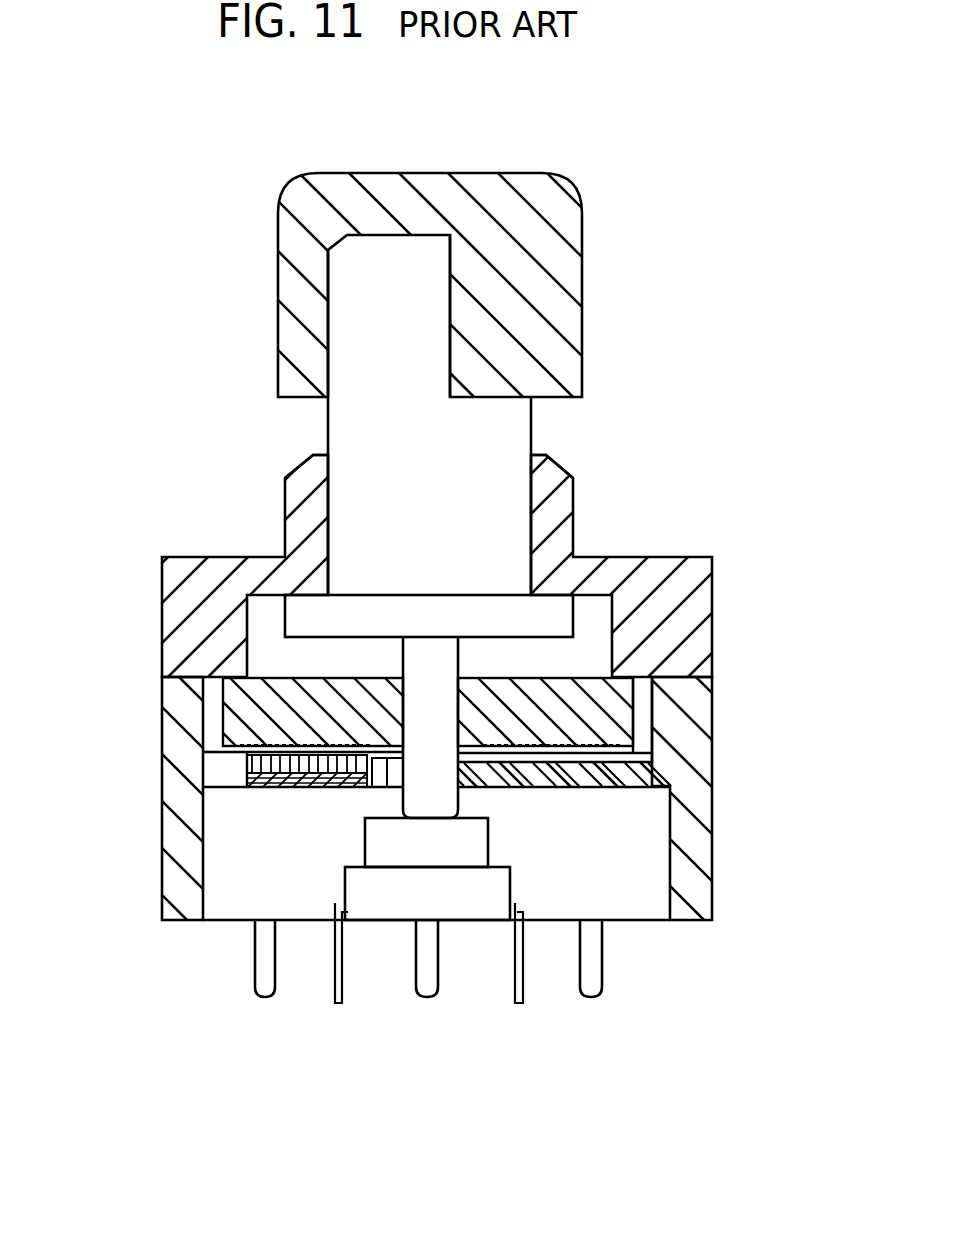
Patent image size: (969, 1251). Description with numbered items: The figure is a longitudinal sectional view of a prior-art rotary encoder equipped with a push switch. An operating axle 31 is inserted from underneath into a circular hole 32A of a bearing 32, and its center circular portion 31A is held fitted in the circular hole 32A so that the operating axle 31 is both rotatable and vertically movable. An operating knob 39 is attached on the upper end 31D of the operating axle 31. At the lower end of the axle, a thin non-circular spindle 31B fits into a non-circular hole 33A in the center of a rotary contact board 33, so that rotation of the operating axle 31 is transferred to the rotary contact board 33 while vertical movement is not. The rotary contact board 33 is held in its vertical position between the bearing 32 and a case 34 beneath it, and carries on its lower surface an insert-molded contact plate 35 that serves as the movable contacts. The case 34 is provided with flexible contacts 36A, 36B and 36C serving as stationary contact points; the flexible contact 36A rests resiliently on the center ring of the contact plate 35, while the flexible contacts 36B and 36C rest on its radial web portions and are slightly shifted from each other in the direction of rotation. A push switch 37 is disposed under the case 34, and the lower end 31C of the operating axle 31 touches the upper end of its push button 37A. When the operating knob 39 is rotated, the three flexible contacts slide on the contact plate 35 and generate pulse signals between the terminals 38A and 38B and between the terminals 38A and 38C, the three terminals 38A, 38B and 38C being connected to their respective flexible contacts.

The operating knob 39 is at (558, 258).
The operating axle 31 is at (549, 526).
The center circular portion 31A is at (498, 497).
The thin non-circular spindle 31B is at (438, 717).
The lower end 31C is at (433, 818).
The upper end 31D is at (418, 352).
The bearing 32 is at (175, 586).
The circular hole 32A is at (327, 508).
The rotary contact board 33 is at (398, 708).
The non-circular hole 33A is at (245, 706).
The case 34 is at (688, 763).
The contact plate 35 is at (250, 752).
The flexible contact 36A is at (362, 784).
The flexible contact 36B is at (345, 780).
The flexible contact 36C is at (330, 775).
The push switch 37 is at (390, 900).
The push button 37A is at (453, 850).
The terminal 38A is at (590, 997).
The terminal 38B is at (427, 997).
The terminal 38C is at (263, 997).